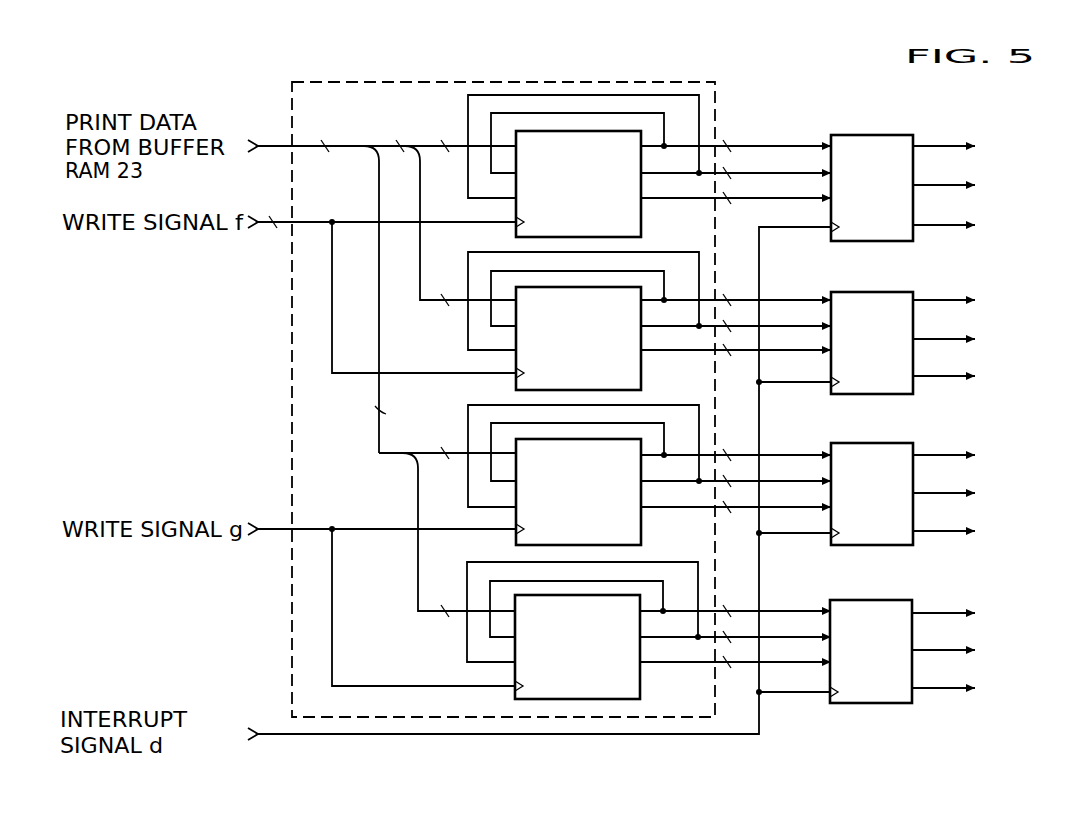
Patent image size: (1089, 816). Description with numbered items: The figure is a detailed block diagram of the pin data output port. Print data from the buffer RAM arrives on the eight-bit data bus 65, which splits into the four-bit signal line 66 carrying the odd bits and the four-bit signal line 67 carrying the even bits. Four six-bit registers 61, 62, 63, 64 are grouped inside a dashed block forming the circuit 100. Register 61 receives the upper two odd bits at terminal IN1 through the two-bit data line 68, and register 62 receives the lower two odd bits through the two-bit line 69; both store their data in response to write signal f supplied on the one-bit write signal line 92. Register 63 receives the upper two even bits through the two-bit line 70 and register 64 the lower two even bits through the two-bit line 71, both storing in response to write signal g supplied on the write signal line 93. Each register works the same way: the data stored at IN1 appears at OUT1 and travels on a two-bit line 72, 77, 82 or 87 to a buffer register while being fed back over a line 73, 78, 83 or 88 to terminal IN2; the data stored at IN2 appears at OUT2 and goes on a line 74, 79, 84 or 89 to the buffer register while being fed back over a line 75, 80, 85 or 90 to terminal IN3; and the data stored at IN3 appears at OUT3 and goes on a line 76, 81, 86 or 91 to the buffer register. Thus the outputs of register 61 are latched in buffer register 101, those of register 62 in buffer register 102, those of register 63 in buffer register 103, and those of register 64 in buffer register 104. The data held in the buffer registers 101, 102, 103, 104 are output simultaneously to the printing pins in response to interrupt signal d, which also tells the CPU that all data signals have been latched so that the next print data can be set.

The register 61 is at (643, 214).
The register 62 is at (641, 366).
The register 63 is at (641, 522).
The register 64 is at (641, 676).
The 8-bit data bus 65 is at (271, 146).
The 4-bit signal line 66 is at (412, 148).
The 4-bit signal line 67 is at (379, 322).
The 2-bit data signal line 68 is at (446, 150).
The 2-bit data signal line 69 is at (420, 265).
The 2-bit data signal line 70 is at (434, 458).
The 2-bit data signal line 71 is at (418, 598).
The 2-bit data signal line 72 is at (770, 146).
The 2-bit data signal line 73 is at (645, 113).
The 2-bit data signal line 74 is at (770, 173).
The 2-bit data signal line 75 is at (680, 95).
The 2-bit data signal line 76 is at (770, 198).
The 2-bit data signal line 77 is at (769, 304).
The 2-bit data signal line 78 is at (666, 271).
The 2-bit data signal line 79 is at (769, 329).
The 2-bit data signal line 80 is at (705, 252).
The 2-bit data signal line 81 is at (769, 354).
The 2-bit data signal line 82 is at (769, 458).
The 2-bit data signal line 83 is at (666, 423).
The 2-bit data signal line 84 is at (769, 484).
The 2-bit data signal line 85 is at (705, 405).
The 2-bit data signal line 86 is at (769, 510).
The 2-bit data signal line 87 is at (769, 615).
The 2-bit data signal line 88 is at (666, 581).
The 2-bit data signal line 89 is at (769, 640).
The 2-bit data signal line 90 is at (705, 562).
The 2-bit data signal line 91 is at (769, 665).
The write signal line 92 is at (351, 220).
The write signal line 93 is at (270, 529).
The circuit 100 is at (716, 84).
The buffer register 101 is at (861, 135).
The buffer register 102 is at (862, 292).
The buffer register 103 is at (862, 443).
The buffer register 104 is at (860, 600).